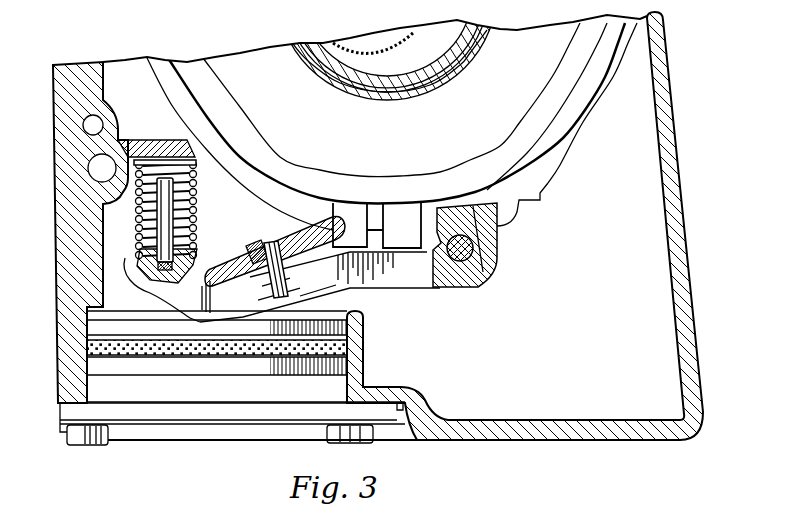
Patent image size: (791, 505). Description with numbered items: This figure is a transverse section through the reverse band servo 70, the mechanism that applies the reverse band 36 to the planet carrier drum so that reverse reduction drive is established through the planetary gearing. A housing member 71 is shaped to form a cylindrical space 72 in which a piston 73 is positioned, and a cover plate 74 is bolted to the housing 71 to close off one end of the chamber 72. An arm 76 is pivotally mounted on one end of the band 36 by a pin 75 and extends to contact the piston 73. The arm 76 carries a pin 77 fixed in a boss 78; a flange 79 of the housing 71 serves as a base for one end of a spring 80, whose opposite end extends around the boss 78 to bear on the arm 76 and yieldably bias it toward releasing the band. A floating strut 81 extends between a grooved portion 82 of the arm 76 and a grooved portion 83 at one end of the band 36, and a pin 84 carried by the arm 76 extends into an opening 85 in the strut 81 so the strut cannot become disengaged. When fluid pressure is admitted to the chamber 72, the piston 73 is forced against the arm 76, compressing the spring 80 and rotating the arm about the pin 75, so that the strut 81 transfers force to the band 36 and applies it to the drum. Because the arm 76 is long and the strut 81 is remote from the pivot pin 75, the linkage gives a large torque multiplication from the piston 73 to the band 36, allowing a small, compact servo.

The reverse band 36 is at (563, 150).
The reverse band servo 70 is at (245, 442).
The housing member 71 is at (672, 153).
The cylindrical space 72 is at (288, 403).
The piston 73 is at (312, 378).
The cover plate 74 is at (180, 425).
The pin 75 is at (463, 257).
The arm 76 is at (420, 270).
The pin 77 is at (197, 191).
The boss 78 is at (140, 248).
The flange 79 is at (143, 147).
The spring 80 is at (176, 161).
The floating strut 81 is at (251, 253).
The grooved portion 82 is at (219, 268).
The grooved portion 83 is at (337, 221).
The pin 84 is at (263, 297).
The opening 85 is at (271, 242).